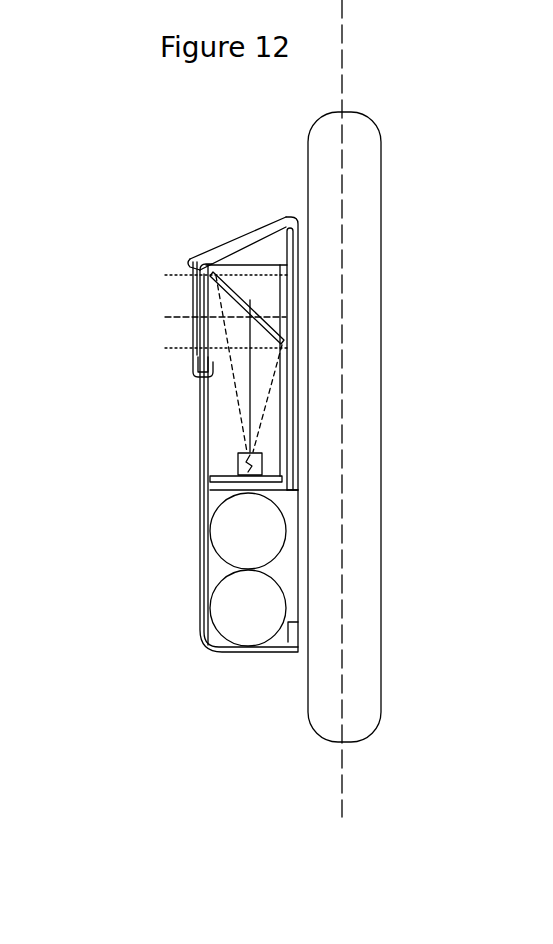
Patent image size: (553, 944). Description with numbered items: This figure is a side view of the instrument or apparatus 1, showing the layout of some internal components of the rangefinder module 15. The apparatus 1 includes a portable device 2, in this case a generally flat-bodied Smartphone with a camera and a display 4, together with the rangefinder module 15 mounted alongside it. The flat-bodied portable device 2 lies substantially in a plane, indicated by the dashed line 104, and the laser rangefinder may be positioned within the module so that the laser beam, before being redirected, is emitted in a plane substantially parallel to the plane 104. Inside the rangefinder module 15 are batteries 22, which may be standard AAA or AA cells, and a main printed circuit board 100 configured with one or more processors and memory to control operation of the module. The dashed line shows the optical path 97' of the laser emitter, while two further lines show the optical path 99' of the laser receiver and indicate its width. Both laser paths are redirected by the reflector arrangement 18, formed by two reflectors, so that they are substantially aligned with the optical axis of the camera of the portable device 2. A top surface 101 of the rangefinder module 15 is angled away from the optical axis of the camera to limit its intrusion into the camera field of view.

The instrument or apparatus 1 is at (319, 408).
The portable device 2 is at (357, 684).
The display 4 is at (421, 381).
The rangefinder module 15 is at (202, 563).
The reflector arrangement 18 is at (249, 305).
The batteries 22 is at (242, 531).
The optical path for the laser emitter 97' is at (208, 363).
The optical path for the laser receiver 99' is at (305, 400).
The main printed circuit board 100 is at (292, 352).
The top surface 101 is at (247, 237).
The plane 104 is at (341, 796).